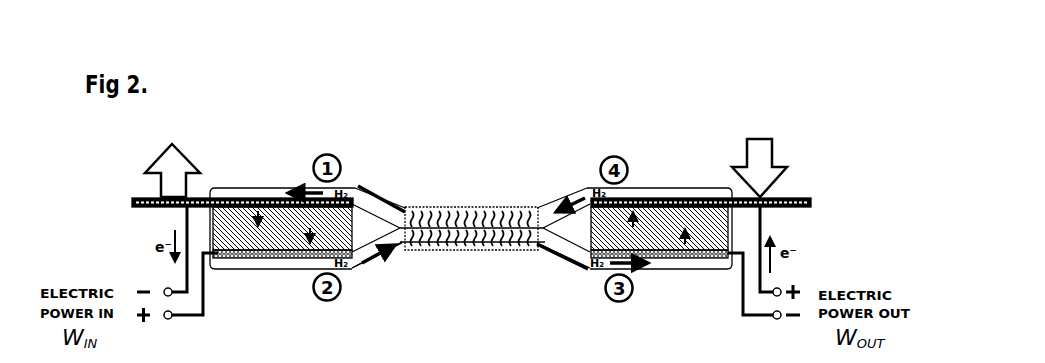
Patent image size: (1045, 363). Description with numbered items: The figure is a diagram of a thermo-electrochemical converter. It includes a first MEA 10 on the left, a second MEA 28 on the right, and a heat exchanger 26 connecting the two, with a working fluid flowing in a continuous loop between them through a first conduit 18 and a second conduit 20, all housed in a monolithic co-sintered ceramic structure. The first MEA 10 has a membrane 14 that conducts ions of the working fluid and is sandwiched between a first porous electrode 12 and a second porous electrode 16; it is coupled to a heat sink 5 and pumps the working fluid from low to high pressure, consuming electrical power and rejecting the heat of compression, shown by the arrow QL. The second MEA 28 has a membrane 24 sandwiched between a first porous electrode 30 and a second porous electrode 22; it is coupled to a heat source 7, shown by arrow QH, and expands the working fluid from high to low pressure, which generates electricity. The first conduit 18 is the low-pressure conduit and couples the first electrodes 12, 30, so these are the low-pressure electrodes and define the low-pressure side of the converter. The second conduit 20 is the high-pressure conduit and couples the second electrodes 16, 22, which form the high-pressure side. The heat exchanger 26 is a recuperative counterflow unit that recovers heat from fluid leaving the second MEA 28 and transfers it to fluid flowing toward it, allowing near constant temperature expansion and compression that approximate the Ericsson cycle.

The heat sink 5 is at (162, 152).
The heat source 7 is at (775, 150).
The first MEA 10 is at (243, 168).
The first porous electrode 12 is at (148, 208).
The membrane 14 is at (260, 237).
The second porous electrode 16 is at (294, 252).
The first conduit 18 is at (358, 186).
The second conduit 20 is at (363, 265).
The second porous electrode 22 is at (672, 252).
The membrane 24 is at (667, 238).
The heat exchanger 26 is at (531, 207).
The second MEA 28 is at (705, 168).
The first porous electrode 30 is at (798, 208).